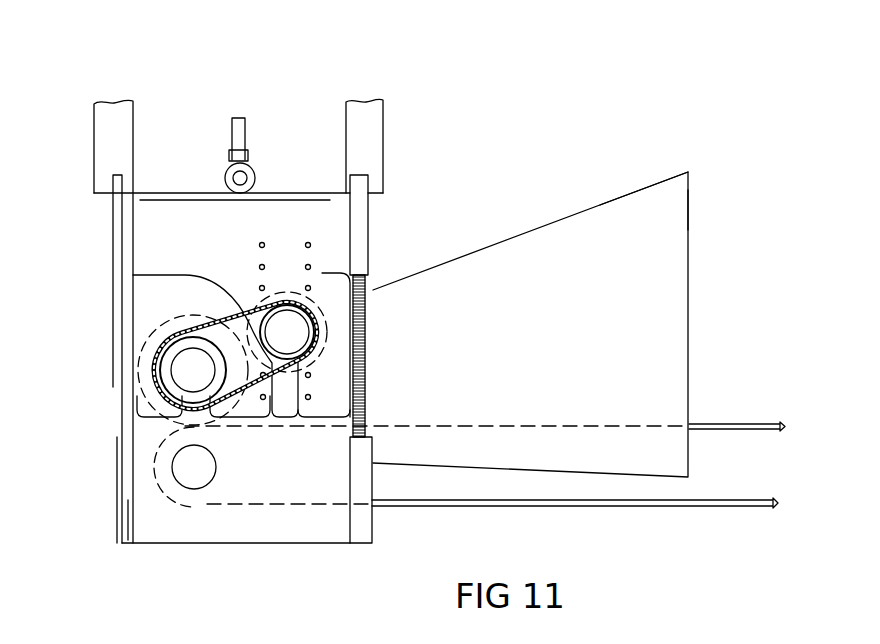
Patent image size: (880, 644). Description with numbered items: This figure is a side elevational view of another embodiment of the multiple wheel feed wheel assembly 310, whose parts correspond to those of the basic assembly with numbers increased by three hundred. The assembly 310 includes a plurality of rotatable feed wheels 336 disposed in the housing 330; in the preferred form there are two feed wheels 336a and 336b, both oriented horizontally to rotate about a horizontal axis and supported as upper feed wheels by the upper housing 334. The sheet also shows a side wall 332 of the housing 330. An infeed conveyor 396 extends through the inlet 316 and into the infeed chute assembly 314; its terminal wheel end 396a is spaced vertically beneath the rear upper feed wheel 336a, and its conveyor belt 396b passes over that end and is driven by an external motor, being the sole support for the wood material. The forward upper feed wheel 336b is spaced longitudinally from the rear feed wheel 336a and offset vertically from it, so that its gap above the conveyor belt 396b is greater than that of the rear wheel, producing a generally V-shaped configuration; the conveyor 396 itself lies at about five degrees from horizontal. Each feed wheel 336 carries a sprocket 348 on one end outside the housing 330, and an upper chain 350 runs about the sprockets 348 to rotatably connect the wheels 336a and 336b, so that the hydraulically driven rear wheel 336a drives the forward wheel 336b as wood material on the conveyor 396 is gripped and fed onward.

The multiple wheel feed wheel assembly 310 is at (540, 124).
The infeed chute assembly 314 is at (634, 188).
The inlet 316 is at (690, 208).
The housing 330 is at (288, 193).
The side wall 332 is at (149, 527).
The upper housing 334 is at (163, 207).
The feed wheels 336 is at (140, 355).
The rear upper feed wheel 336a is at (138, 333).
The forward upper feed wheel 336b is at (297, 285).
The sprocket 348 is at (302, 316).
The upper chain 350 is at (133, 275).
The infeed conveyor 396 is at (735, 424).
The terminal wheel end 396a is at (200, 489).
The conveyor belt 396b is at (672, 507).